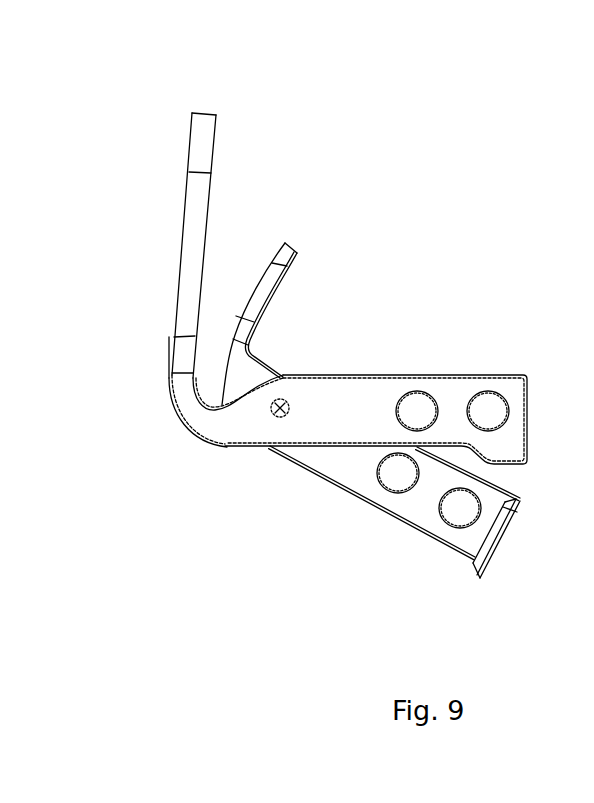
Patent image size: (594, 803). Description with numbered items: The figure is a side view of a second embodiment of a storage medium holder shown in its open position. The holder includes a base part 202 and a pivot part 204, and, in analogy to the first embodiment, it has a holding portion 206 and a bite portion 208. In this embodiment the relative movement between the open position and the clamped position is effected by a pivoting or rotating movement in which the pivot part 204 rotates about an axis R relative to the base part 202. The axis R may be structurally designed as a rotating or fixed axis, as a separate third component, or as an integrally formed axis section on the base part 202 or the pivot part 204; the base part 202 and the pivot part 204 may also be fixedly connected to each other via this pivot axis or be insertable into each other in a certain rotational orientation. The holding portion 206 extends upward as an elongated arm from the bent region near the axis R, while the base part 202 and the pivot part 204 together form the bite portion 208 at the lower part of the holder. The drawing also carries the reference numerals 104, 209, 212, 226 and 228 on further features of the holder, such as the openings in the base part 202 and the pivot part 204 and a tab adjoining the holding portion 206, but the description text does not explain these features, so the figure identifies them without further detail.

The bracket assembly 104 is at (308, 103).
The holding portion 206 is at (170, 110).
The bend line of upper arm 209 is at (226, 168).
The tab 212 is at (248, 270).
The base part 202 is at (332, 363).
The holes in first plate 226 is at (395, 393).
The pivot part 204 is at (313, 480).
The holes in second plate 228 is at (367, 472).
The bite portion 208 is at (522, 627).
The axis R is at (277, 416).